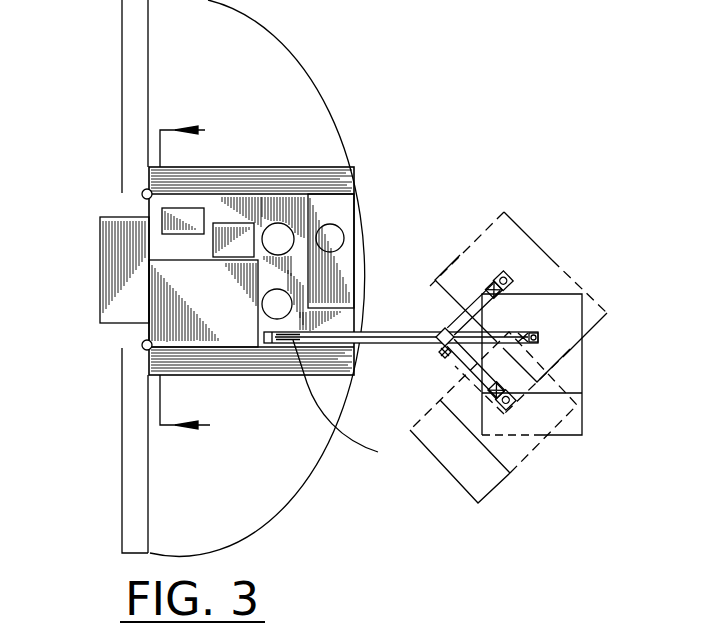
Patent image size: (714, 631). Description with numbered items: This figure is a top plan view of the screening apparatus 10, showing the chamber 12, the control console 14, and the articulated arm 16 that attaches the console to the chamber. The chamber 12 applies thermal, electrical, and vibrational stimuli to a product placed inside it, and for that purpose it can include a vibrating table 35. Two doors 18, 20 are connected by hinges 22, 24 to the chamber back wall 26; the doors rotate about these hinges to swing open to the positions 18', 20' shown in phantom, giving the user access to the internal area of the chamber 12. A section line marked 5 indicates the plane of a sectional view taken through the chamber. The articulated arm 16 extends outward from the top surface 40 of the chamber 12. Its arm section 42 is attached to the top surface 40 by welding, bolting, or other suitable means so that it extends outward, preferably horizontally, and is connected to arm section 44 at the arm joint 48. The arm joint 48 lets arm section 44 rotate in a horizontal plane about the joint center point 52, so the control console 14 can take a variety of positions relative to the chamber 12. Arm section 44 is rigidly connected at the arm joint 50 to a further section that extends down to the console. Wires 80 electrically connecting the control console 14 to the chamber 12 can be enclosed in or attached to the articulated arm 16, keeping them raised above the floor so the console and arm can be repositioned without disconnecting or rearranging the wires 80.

The section line 5- 5 is at (194, 283).
The screening apparatus 10 is at (553, 208).
The chamber 12 is at (356, 223).
The control console 14 is at (585, 362).
The articulated arm 16 is at (401, 347).
The door 18 is at (251, 399).
The open position of door 18' is at (96, 450).
The door 20 is at (251, 159).
The open position of door 20' is at (82, 96).
The hinge 22 is at (142, 343).
The hinge 24 is at (142, 194).
The chamber back wall 26 is at (147, 331).
The vibrating table 35 is at (583, 432).
The top surface 40 is at (357, 318).
The arm section 42 is at (416, 335).
The arm section 44 is at (450, 331).
The arm joint 48 is at (447, 348).
The arm joint 50 is at (533, 333).
The joint center point 52 is at (443, 333).
The wires 80 is at (349, 403).